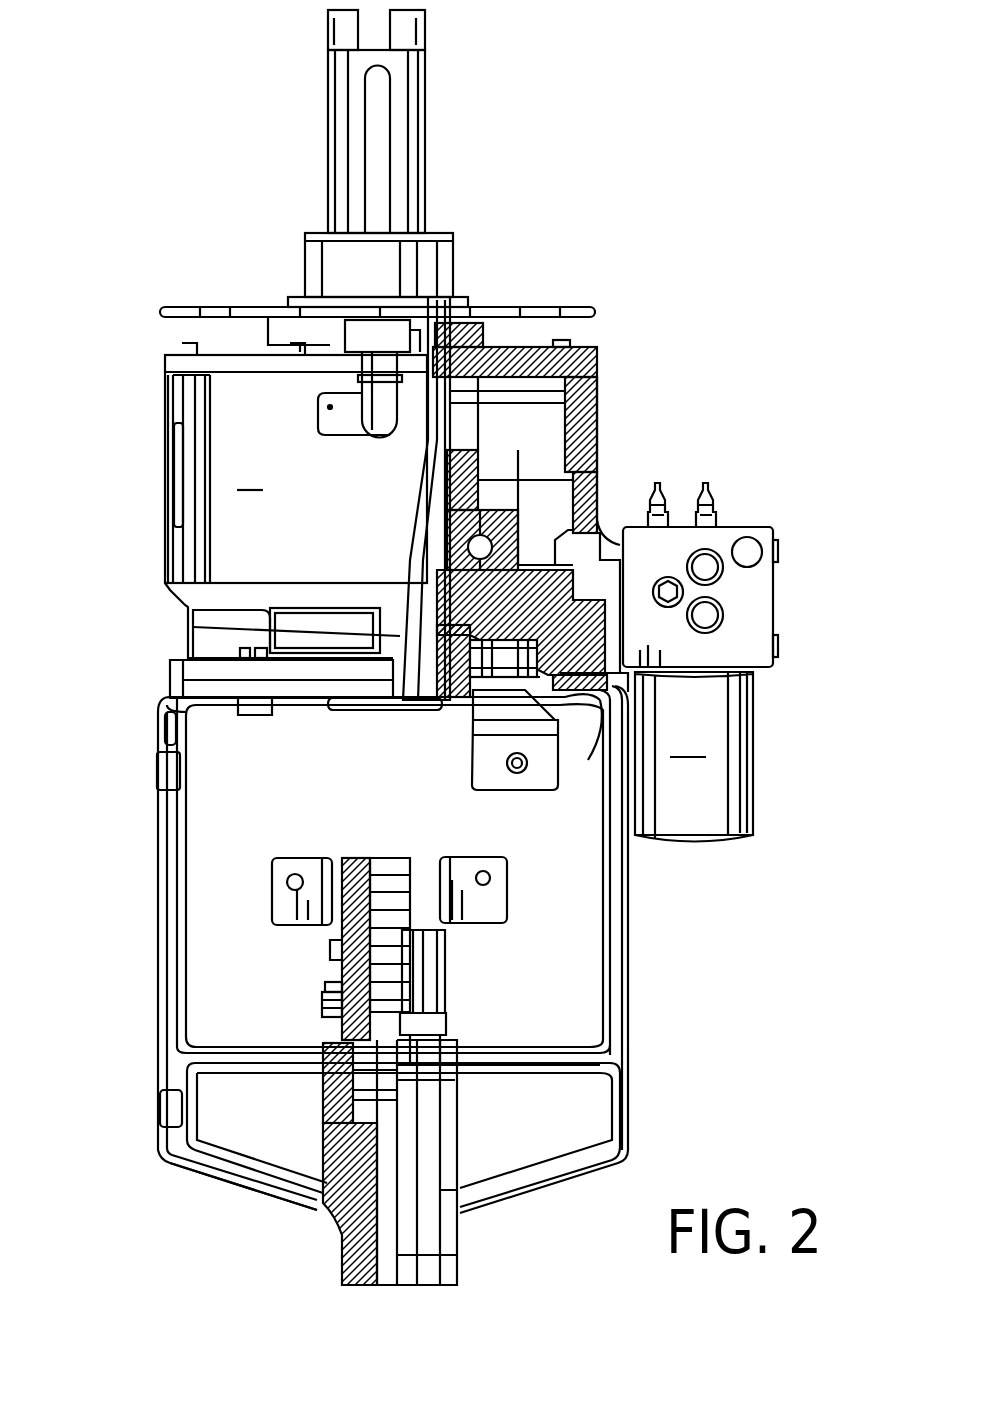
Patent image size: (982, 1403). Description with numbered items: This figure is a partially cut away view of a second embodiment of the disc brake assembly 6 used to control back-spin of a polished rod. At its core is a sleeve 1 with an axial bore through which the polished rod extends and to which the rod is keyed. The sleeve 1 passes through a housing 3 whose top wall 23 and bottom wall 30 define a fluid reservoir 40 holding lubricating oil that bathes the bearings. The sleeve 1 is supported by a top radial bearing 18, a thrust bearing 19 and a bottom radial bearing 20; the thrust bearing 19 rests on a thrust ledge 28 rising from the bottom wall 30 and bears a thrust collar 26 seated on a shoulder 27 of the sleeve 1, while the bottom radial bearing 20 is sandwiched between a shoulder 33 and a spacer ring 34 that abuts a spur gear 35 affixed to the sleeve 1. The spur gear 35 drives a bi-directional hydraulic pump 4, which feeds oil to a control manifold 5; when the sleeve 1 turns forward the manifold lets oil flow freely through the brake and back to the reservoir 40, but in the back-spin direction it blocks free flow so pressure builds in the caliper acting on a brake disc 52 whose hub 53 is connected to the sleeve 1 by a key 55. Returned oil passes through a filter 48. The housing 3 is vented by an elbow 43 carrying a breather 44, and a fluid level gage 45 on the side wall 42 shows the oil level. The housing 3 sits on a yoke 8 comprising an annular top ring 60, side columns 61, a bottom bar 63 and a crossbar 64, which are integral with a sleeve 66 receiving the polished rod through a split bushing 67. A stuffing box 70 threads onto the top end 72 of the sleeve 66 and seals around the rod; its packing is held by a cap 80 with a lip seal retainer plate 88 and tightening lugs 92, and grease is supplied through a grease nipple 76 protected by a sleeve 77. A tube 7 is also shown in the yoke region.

The sleeve 1 is at (425, 122).
The housing 3 is at (296, 501).
The bi-directional hydraulic pump 4 is at (472, 772).
The control manifold 5 is at (755, 590).
The disc brake assembly 6 is at (658, 250).
The tube 7 is at (447, 1003).
The yoke 8 is at (630, 1034).
The top radial bearing 18 is at (492, 330).
The thrust bearing 19 is at (522, 547).
The bottom radial bearing 20 is at (425, 610).
The top wall 23 is at (590, 350).
The thrust collar 26 is at (555, 410).
The shoulder 27 is at (445, 451).
The thrust ledge 28 is at (640, 500).
The bottom wall 30 is at (630, 677).
The shoulder 33 is at (395, 603).
The spacer ring 34 is at (400, 636).
The spur gear 35 is at (432, 702).
The fluid reservoir 40 is at (583, 400).
The side wall 42 is at (180, 522).
The elbow 43 is at (345, 417).
The breather 44 is at (370, 335).
The fluid level gage 45 is at (172, 458).
The oil filter 48 is at (694, 757).
The brake disc 52 is at (182, 307).
The hub 53 is at (305, 250).
The key 55 is at (372, 117).
The top ring 60 is at (588, 760).
The side columns 61 is at (168, 928).
The bottom bar 63 is at (176, 1172).
The crossbar 64 is at (160, 1110).
The sleeve 66 is at (450, 1140).
The split bushing 67 is at (340, 1218).
The stuffing box 70 is at (340, 962).
The top end 72 is at (333, 1078).
The grease nipple 76 is at (328, 1005).
The sleeve 77 is at (330, 984).
The cap 80 is at (428, 862).
The lip seal retainer plate 88 is at (356, 858).
The tightening lugs 92 is at (278, 865).